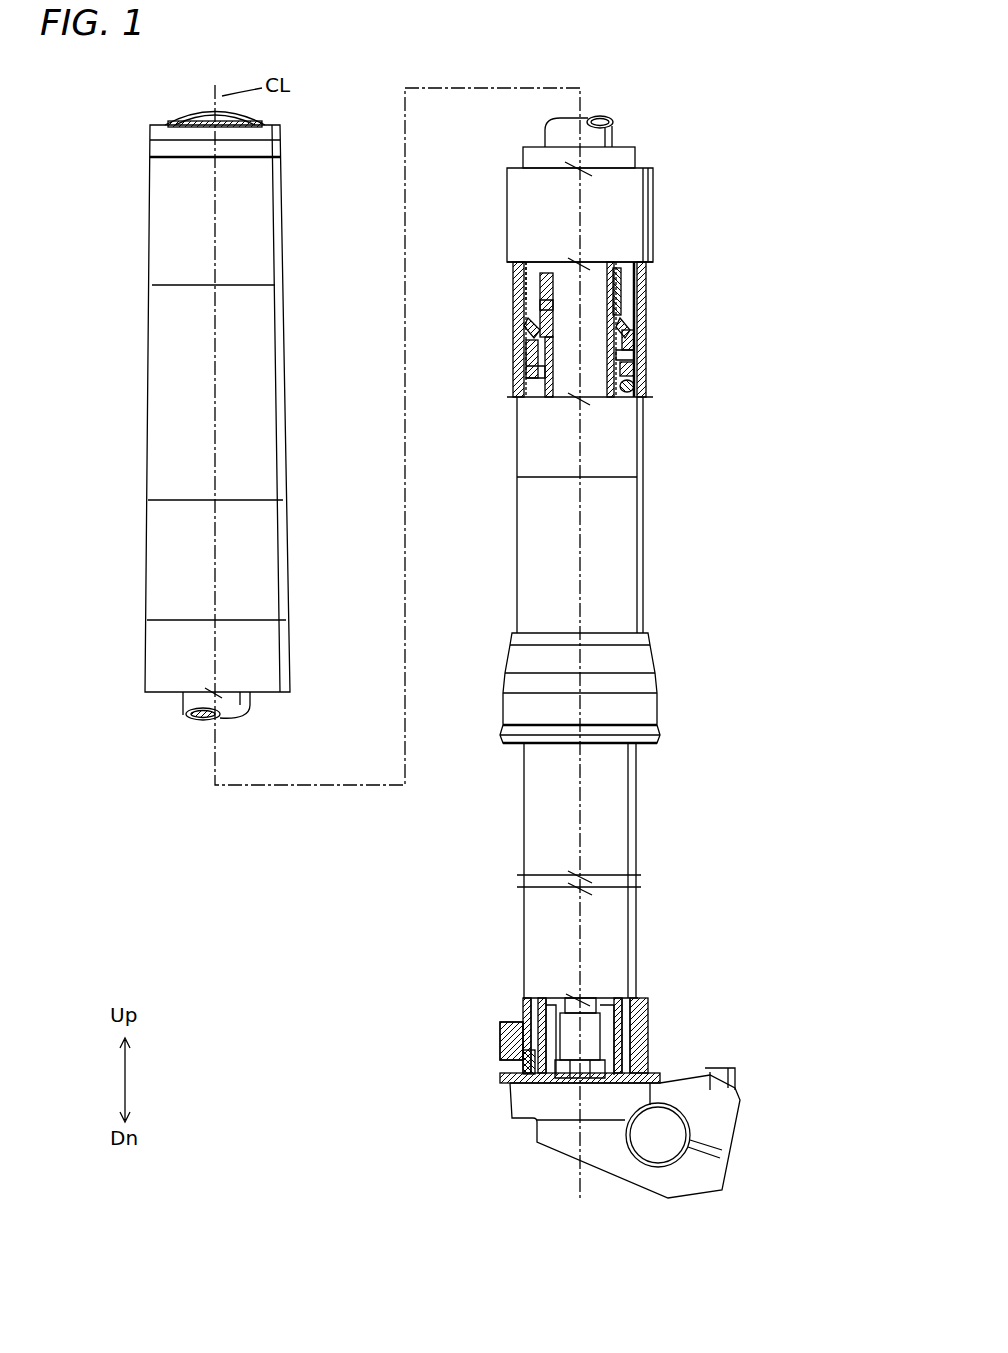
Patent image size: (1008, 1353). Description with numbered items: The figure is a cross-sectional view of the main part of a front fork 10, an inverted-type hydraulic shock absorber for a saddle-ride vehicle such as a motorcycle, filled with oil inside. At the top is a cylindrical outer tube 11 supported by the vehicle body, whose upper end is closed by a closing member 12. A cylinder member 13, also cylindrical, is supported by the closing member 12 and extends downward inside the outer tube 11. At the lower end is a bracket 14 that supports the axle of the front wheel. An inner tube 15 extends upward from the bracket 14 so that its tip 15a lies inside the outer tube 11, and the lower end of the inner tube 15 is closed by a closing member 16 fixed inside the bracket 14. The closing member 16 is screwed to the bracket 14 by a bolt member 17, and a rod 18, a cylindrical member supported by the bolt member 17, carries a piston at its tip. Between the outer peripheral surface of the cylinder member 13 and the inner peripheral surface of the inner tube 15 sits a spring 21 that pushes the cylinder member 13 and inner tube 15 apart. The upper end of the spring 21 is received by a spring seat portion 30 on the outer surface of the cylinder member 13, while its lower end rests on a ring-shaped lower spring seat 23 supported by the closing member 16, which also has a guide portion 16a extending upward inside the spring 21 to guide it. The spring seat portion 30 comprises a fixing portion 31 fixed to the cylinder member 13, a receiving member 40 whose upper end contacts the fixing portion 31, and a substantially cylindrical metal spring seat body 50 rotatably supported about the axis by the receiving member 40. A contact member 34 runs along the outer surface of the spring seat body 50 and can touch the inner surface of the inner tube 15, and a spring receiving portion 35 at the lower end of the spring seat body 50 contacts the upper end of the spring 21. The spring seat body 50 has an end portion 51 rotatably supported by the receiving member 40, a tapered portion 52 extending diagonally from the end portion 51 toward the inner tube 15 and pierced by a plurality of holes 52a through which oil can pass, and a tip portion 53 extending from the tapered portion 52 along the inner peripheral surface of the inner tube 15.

The front fork 10 is at (733, 141).
The outer tube 11 is at (165, 412).
The closing member 12 is at (165, 130).
The cylinder member 13 is at (185, 705).
The bracket 14 is at (560, 1140).
The inner tube 15 is at (615, 812).
The tip 15a is at (612, 140).
The closing member 16 is at (540, 1082).
The guide portion 16a is at (553, 1002).
The bolt member 17 is at (590, 1040).
The rod 18 is at (585, 1005).
The spring 21 is at (640, 1015).
The lower spring seat 23 is at (530, 1060).
The spring seat portion 30 is at (712, 243).
The fixing portion 31 is at (633, 280).
The contact member 34 is at (620, 355).
The spring receiving portion 35 is at (628, 380).
The receiving member 40 is at (627, 306).
The spring seat body 50 is at (639, 332).
The end portion 51 is at (545, 302).
The tapered portion 52 is at (540, 318).
The holes 52a is at (562, 330).
The tip portion 53 is at (535, 340).